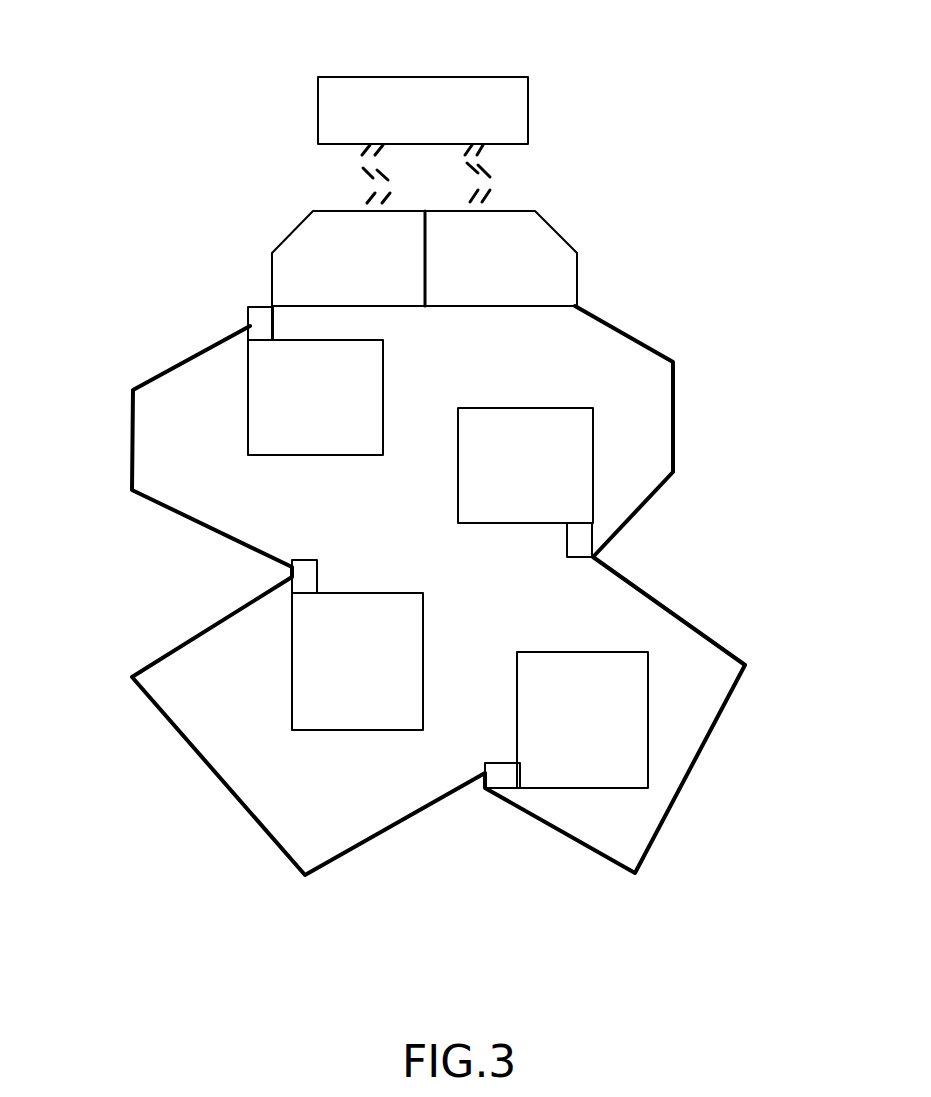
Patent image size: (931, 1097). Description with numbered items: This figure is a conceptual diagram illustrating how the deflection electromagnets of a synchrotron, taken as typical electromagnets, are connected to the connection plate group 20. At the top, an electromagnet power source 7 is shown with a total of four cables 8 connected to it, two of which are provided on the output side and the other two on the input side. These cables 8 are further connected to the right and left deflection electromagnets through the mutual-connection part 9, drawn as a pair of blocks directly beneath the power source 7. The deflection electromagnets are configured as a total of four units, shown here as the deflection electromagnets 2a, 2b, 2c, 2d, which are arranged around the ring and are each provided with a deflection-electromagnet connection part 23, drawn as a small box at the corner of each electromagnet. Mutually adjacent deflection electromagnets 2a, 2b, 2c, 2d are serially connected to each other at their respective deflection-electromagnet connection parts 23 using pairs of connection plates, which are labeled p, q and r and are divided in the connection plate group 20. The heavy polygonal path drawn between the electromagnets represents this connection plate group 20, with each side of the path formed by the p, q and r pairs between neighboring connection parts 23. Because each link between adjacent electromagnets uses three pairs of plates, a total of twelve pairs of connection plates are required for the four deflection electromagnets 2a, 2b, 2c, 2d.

The electromagnet power source 7 is at (387, 76).
The cables 8 is at (368, 192).
The mutual-connection part 9 is at (300, 221).
The connection plate group 20 is at (685, 495).
The deflection-electromagnet connection part 23 is at (250, 315).
The deflection electromagnet 2a is at (500, 407).
The deflection electromagnet 2b is at (553, 650).
The deflection electromagnet 2c is at (350, 732).
The deflection electromagnet 2d is at (245, 398).